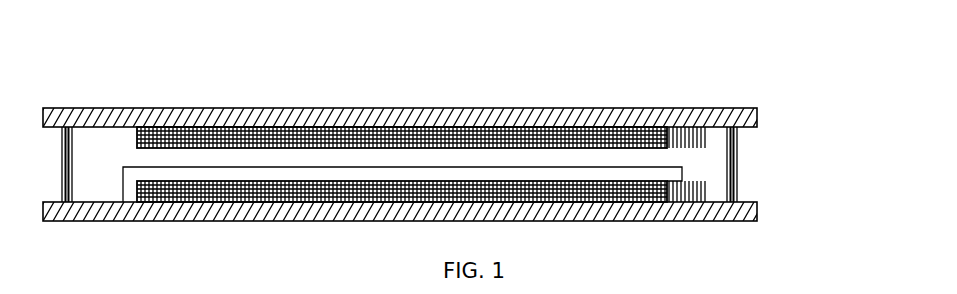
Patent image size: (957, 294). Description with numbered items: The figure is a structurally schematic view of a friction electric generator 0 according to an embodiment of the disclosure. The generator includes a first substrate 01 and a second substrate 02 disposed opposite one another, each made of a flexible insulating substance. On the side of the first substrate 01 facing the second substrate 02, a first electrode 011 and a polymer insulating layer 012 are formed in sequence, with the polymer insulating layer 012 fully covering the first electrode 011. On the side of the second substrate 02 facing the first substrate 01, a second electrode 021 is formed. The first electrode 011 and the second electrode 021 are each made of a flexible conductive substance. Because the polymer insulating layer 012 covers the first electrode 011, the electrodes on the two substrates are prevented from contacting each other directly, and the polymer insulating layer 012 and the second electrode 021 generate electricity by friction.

The friction electric generator 0 is at (435, 62).
The first substrate 01 is at (767, 212).
The first electrode 011 is at (680, 193).
The polymer insulating layer 012 is at (693, 178).
The second substrate 02 is at (766, 115).
The second electrode 021 is at (679, 138).